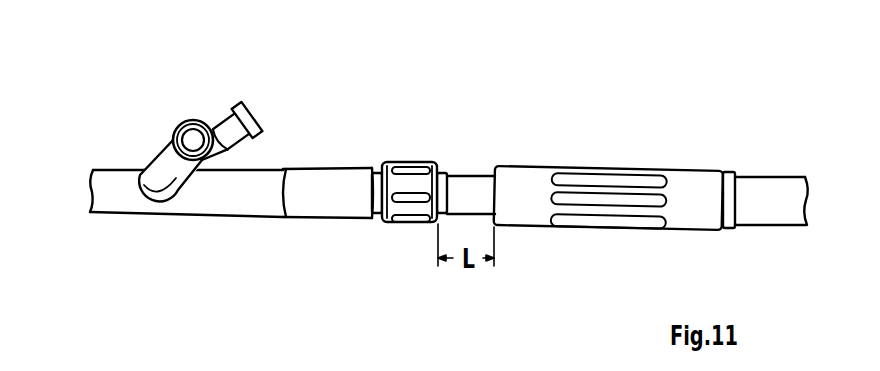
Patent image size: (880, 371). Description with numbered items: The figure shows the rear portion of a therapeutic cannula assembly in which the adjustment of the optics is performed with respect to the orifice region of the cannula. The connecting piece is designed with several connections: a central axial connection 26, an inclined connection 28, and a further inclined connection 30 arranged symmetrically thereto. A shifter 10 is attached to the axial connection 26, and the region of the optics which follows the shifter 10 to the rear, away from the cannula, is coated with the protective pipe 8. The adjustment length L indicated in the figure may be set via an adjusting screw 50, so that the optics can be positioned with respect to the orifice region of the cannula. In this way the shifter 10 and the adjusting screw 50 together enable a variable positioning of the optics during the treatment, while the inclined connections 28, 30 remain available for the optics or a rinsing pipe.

The protective pipe 8 is at (765, 175).
The shifter 10 is at (452, 173).
The axial connection 26 is at (337, 168).
The inclined connection 28 is at (176, 129).
The further inclined connection 30 is at (229, 118).
The adjusting screw 50 is at (382, 223).